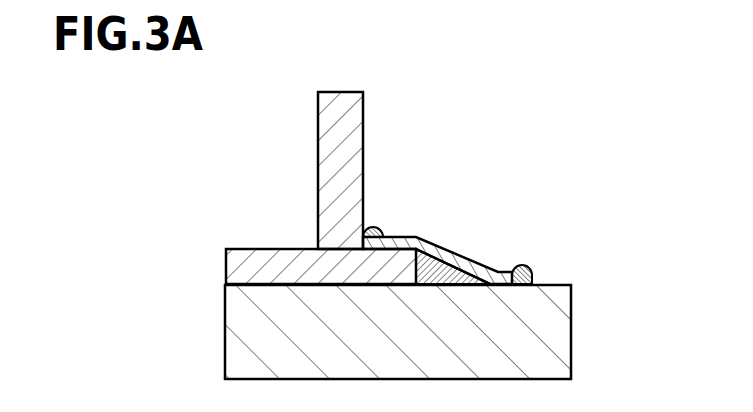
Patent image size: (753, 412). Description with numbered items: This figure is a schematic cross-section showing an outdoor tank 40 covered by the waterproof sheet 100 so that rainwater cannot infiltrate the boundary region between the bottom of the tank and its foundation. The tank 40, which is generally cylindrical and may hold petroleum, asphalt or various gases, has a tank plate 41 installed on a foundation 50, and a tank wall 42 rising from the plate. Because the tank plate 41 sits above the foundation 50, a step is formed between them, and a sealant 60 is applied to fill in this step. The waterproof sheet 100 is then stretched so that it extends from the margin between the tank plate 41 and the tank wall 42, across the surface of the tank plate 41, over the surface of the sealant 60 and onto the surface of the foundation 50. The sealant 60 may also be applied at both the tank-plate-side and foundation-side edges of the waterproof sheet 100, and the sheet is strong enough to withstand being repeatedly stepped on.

The outdoor tank 40 is at (317, 158).
The tank plate 41 is at (286, 271).
The tank wall 42 is at (363, 133).
The foundation 50 is at (523, 327).
The sealant 60 is at (374, 228).
The waterproof sheet 100 is at (473, 256).